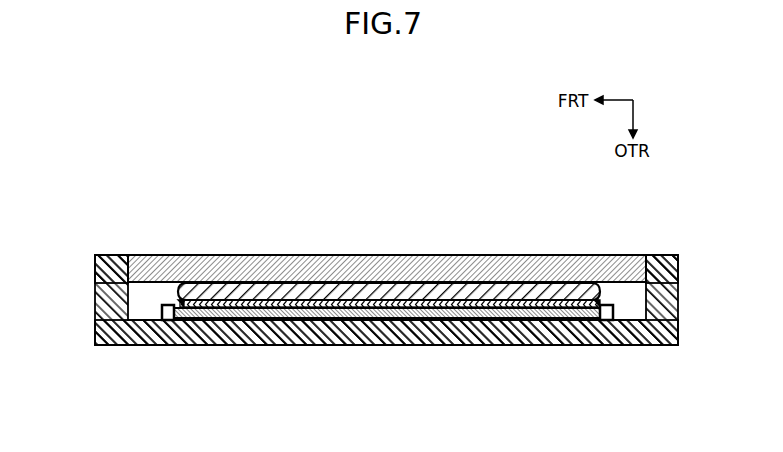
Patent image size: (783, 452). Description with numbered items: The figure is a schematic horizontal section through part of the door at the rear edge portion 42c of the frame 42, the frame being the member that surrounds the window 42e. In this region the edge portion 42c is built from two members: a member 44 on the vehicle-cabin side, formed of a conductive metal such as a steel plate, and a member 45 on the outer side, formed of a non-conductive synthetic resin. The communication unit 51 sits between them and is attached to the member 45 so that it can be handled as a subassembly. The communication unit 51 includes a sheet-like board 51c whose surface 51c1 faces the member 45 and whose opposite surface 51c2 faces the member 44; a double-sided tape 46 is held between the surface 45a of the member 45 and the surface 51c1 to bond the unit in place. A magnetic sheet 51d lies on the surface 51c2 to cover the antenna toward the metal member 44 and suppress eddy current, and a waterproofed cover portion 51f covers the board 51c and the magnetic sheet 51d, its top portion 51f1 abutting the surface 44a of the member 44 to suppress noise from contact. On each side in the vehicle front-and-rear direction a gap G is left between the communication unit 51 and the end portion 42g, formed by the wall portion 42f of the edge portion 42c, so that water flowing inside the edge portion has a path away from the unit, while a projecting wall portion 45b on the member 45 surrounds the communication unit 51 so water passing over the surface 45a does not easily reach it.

The frame 42 is at (386, 292).
The edge portion 42c is at (386, 292).
The window 42e is at (386, 342).
The wall portion 42f is at (100, 275).
The end portion 42g is at (100, 333).
The member 44 is at (615, 255).
The surface 44a is at (597, 287).
The member 45 is at (630, 345).
The surface 45a is at (341, 289).
The wall portion 45b is at (165, 304).
The double-sided tape 46 is at (305, 321).
The communication unit 51 is at (177, 284).
The board 51c is at (243, 320).
The surface 51c1 is at (395, 320).
The surface 51c2 is at (445, 288).
The magnetic sheet 51d is at (230, 288).
The cover portion 51f is at (496, 282).
The top portion 51f1 is at (272, 284).
The gap G is at (140, 305).